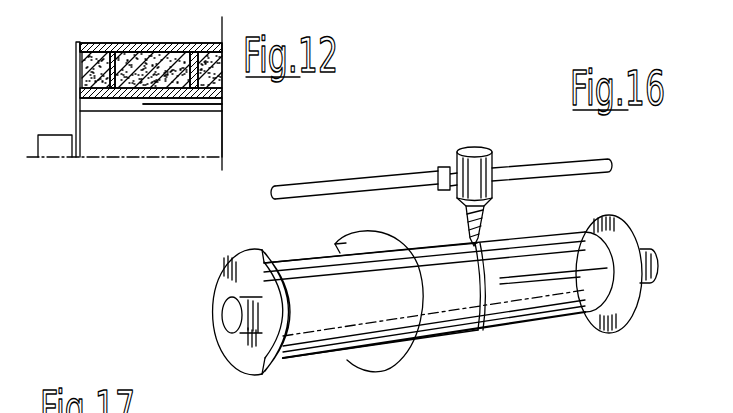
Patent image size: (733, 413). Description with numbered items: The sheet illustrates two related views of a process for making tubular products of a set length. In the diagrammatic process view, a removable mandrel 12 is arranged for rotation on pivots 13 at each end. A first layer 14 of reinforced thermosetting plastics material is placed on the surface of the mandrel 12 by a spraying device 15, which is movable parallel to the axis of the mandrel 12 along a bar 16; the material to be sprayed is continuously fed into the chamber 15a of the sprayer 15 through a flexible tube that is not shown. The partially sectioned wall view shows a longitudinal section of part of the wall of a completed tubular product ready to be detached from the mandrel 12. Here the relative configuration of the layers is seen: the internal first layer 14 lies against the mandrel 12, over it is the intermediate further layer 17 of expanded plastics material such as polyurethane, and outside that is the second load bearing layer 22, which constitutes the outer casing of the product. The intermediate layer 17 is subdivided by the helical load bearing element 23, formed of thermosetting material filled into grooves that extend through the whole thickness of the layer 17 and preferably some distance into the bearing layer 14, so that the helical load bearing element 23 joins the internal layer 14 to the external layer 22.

In FIG. 12, the removable mandrel 12 is at (212, 136).
In FIG. 16, the removable mandrel 12 is at (553, 305).
In FIG. 12, the pivots 13 is at (50, 141).
In FIG. 16, the pivots 13 is at (233, 308).
In FIG. 12, the first layer 14 is at (172, 98).
In FIG. 16, the first layer 14 is at (426, 260).
In FIG. 16, the spraying device 15 is at (484, 208).
In FIG. 16, the chamber 15a is at (474, 158).
In FIG. 16, the bar 16 is at (558, 172).
In FIG. 12, the further layer 17 is at (160, 68).
In FIG. 12, the second load bearing layer 22 is at (120, 50).
In FIG. 12, the helical load bearing element 23 is at (108, 74).